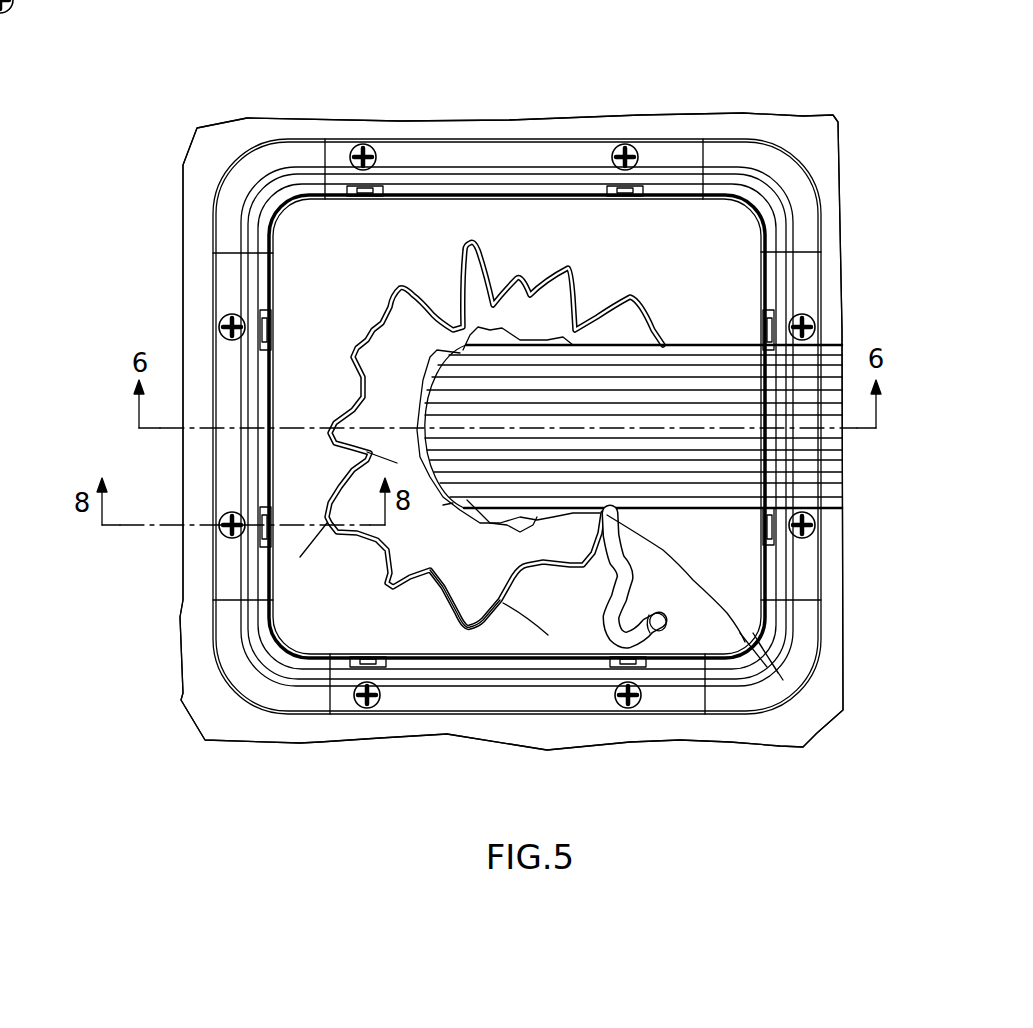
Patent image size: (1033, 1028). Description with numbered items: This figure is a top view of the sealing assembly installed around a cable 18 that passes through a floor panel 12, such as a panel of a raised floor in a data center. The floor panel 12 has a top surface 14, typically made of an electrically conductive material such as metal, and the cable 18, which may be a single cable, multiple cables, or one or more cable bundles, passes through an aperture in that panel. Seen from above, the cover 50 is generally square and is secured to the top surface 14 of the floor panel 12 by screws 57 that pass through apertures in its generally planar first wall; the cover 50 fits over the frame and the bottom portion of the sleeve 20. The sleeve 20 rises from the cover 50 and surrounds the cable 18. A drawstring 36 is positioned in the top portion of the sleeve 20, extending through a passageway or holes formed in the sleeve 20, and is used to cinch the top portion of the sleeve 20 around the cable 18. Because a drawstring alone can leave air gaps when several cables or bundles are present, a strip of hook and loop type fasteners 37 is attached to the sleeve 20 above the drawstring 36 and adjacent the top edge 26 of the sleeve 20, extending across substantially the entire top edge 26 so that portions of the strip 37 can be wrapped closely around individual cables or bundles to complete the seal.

The floor panel 12 is at (178, 184).
The top surface 14 is at (237, 130).
The cable 18 is at (828, 465).
The sleeve 20 is at (470, 237).
The top edge 26 is at (453, 610).
The drawstring 36 is at (605, 632).
The strip of hook and loop type fasteners 37 is at (357, 343).
The cover 50 is at (530, 153).
The screws 57 is at (353, 147).